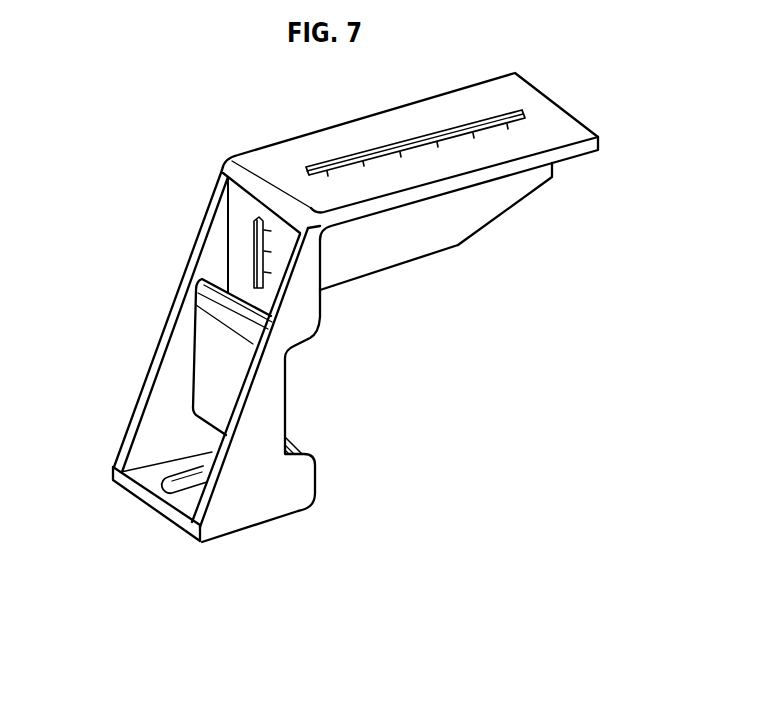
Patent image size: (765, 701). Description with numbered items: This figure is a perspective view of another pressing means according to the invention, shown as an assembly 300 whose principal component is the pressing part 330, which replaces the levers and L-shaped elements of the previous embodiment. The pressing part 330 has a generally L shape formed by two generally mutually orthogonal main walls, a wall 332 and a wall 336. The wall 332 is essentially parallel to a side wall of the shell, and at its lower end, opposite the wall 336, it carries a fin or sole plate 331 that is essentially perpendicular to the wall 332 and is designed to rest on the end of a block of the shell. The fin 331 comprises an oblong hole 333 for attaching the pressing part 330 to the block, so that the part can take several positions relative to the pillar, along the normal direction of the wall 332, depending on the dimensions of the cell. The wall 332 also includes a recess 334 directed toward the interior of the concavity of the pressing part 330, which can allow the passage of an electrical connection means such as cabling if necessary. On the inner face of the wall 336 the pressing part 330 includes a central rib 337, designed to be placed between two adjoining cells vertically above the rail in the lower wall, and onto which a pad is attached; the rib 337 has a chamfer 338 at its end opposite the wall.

The bracket assembly 300 is at (160, 142).
The pressing part 330 is at (563, 82).
The fin or sole plate 331 is at (157, 470).
The main wall 332 is at (148, 314).
The oblong hole 333 is at (190, 470).
The recess 334 is at (303, 404).
The main wall 336 is at (388, 104).
The central rib 337 is at (432, 228).
The chamfer 338 is at (512, 213).